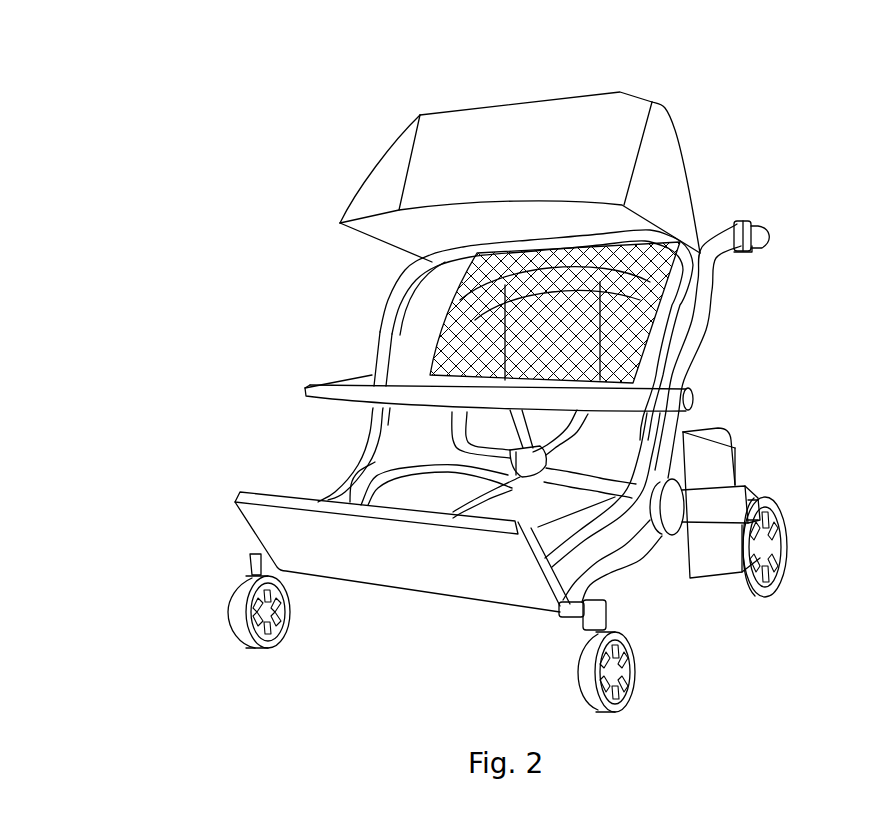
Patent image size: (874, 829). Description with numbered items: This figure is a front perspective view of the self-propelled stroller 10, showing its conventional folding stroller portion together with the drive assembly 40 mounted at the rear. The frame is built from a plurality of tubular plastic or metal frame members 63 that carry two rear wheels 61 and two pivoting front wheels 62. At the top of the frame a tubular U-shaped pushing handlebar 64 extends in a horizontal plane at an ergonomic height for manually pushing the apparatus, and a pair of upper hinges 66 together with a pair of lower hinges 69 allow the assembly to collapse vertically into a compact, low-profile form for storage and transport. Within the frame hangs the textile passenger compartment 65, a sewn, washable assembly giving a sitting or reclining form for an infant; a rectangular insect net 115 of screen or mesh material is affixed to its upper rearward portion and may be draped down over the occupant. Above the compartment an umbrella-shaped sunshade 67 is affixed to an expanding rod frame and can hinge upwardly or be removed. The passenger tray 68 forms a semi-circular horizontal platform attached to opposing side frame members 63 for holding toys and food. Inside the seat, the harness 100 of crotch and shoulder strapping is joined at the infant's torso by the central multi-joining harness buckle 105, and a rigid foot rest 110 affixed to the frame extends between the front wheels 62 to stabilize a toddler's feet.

The self-propelled stroller 10 is at (118, 180).
The drive assembly 40 is at (717, 594).
The rear wheels 61 is at (784, 552).
The pivoting front wheels 62 is at (230, 600).
The frame members 63 is at (743, 508).
The pushing handlebar 64 is at (772, 233).
The textile passenger compartment 65 is at (450, 280).
The upper hinges 66 is at (757, 252).
The sunshade 67 is at (673, 160).
The passenger tray 68 is at (308, 390).
The lower hinges 69 is at (679, 545).
The harness 100 is at (535, 433).
The harness buckle 105 is at (510, 462).
The foot rest 110 is at (422, 580).
The insect net 115 is at (432, 358).